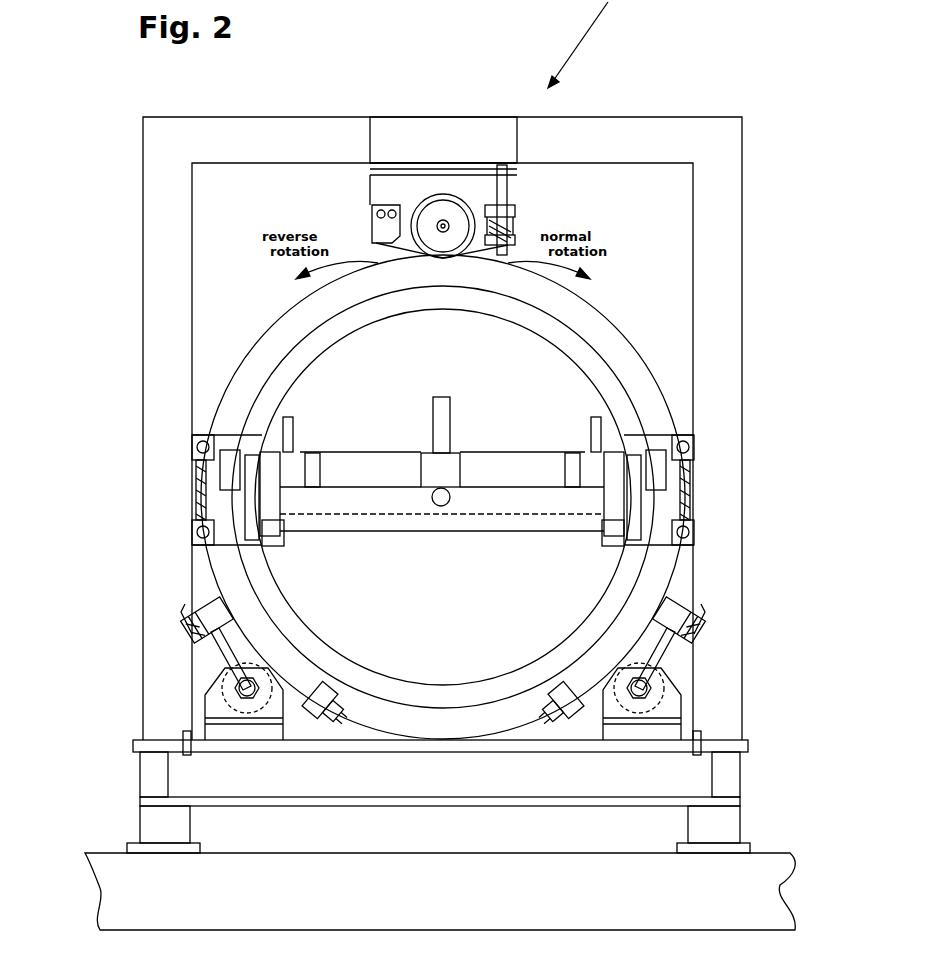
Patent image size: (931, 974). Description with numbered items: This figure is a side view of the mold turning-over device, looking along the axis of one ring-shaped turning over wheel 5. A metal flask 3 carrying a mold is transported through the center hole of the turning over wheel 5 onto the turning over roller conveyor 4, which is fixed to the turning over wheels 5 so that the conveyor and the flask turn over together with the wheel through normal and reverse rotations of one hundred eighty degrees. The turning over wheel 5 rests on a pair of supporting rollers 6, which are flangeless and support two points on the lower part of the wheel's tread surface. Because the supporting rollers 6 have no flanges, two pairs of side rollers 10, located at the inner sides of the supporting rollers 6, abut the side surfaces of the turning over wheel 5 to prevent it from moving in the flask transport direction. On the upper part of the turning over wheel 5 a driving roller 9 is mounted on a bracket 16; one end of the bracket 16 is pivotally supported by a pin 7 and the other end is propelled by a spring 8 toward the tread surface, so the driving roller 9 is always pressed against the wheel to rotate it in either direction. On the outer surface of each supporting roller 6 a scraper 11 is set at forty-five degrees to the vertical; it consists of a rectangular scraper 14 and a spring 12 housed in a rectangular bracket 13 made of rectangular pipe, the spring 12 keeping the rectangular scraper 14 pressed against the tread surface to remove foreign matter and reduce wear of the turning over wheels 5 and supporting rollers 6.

The metal flask 3 is at (520, 447).
The turning over roller conveyor 4 is at (292, 547).
The turning over wheel 5 is at (654, 378).
The supporting roller 6 is at (225, 695).
The pin 7 is at (372, 222).
The spring 8 is at (515, 219).
The driving roller 9 is at (420, 198).
The side roller 10 is at (322, 688).
The scraper 11 is at (197, 599).
The spring 12 is at (185, 630).
The rectangular bracket 13 is at (205, 648).
The rectangular scraper 14 is at (190, 612).
The bracket 16 is at (533, 192).